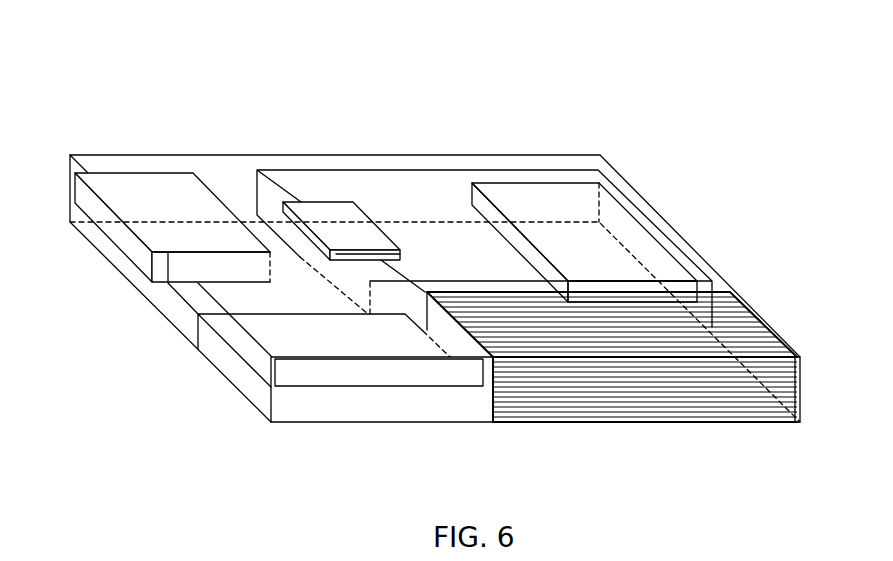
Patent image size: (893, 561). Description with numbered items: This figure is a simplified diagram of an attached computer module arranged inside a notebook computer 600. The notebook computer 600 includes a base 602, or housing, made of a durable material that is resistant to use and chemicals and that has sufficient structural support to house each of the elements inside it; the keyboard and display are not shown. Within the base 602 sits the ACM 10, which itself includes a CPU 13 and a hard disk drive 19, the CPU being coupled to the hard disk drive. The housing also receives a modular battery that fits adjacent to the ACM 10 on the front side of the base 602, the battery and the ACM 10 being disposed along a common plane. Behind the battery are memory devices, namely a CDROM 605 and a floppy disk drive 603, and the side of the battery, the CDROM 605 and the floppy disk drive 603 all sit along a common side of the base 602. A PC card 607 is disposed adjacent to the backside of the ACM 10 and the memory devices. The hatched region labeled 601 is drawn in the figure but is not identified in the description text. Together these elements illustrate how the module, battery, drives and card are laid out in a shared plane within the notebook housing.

The notebook computer 600 is at (623, 75).
The ACM 10 is at (592, 173).
The CPU 13 is at (342, 208).
The hard disk drive 19 is at (623, 223).
The heat sink 601 is at (753, 338).
The base 602 is at (625, 410).
The floppy disk drive 603 is at (296, 408).
The CDROM 605 is at (268, 370).
The PC card 607 is at (172, 182).